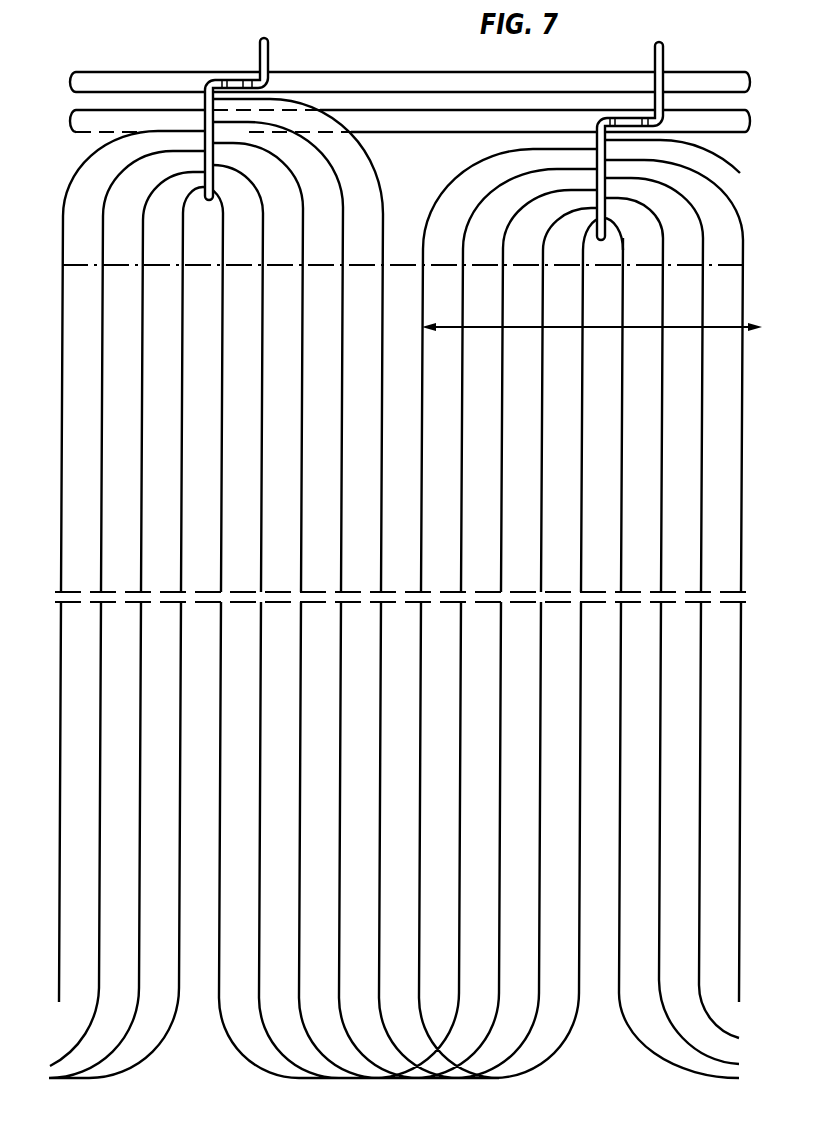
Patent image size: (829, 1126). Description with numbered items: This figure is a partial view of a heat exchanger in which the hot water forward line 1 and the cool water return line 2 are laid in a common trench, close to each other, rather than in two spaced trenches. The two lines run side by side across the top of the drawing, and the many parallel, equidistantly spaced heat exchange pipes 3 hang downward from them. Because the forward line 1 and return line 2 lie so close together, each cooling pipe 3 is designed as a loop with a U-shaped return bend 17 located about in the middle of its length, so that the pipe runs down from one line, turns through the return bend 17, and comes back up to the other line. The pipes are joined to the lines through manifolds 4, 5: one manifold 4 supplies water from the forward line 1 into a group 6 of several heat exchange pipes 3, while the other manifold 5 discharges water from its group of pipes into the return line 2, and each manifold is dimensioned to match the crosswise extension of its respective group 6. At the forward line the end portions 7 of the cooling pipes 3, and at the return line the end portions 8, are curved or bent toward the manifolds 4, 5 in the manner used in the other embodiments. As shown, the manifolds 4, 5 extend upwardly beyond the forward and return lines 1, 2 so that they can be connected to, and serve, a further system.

The hot water forward line 1 is at (370, 83).
The cool water return line 2 is at (417, 122).
The heat exchange pipes 3 is at (263, 448).
The manifold 4 is at (203, 100).
The manifold 5 is at (597, 148).
The group of heat exchange pipes 6 is at (592, 317).
The end portions at the forward line 7 is at (262, 245).
The end portions at the return line 8 is at (463, 248).
The U-shaped return bend 17 is at (258, 998).